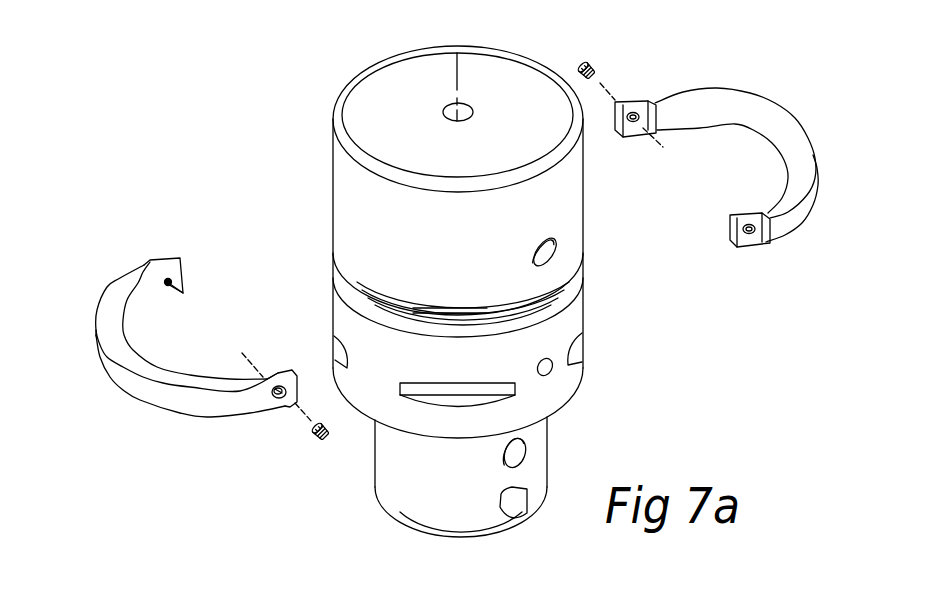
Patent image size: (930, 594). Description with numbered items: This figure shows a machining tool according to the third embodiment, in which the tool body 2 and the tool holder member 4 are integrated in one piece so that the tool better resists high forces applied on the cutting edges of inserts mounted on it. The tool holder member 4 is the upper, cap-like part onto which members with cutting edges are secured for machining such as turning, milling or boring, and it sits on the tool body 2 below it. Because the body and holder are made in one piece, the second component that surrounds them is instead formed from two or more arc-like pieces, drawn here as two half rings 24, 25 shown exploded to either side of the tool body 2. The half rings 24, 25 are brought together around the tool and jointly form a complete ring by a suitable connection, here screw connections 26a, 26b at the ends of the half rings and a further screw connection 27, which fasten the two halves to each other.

The tool body 2 is at (576, 369).
The tool holder member 4 is at (343, 187).
The half ring 24 is at (108, 312).
The half ring 25 is at (728, 98).
The screw connection 26a is at (279, 400).
The screw connection 26b is at (752, 241).
The screw connection 27 is at (328, 446).